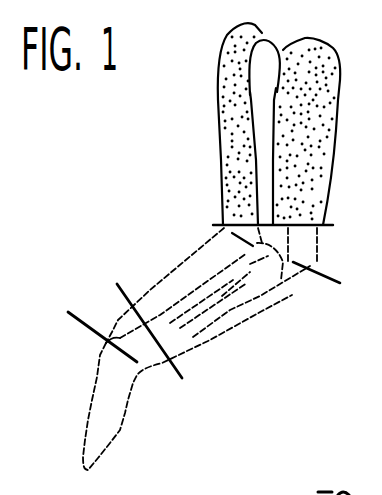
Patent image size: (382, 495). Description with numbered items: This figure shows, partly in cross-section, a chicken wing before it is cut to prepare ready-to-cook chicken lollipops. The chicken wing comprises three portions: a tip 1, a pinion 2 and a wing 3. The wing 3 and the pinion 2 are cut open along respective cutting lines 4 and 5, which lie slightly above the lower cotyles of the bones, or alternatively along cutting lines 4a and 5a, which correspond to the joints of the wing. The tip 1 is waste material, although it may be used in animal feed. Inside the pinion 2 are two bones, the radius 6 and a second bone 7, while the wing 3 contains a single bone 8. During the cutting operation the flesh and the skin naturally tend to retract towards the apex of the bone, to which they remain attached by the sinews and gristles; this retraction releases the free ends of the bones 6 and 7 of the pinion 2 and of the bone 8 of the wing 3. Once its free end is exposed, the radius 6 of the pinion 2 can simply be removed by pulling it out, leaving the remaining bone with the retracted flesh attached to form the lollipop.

The tip 1 is at (85, 426).
The pinion 2 is at (172, 277).
The wing 3 is at (238, 141).
The cutting line 4 is at (226, 225).
The cutting line 4a is at (318, 276).
The cutting line 5 is at (130, 301).
The cutting line 5a is at (94, 331).
The radius 6 is at (184, 321).
The bone 7 is at (226, 279).
The bone 8 is at (265, 55).